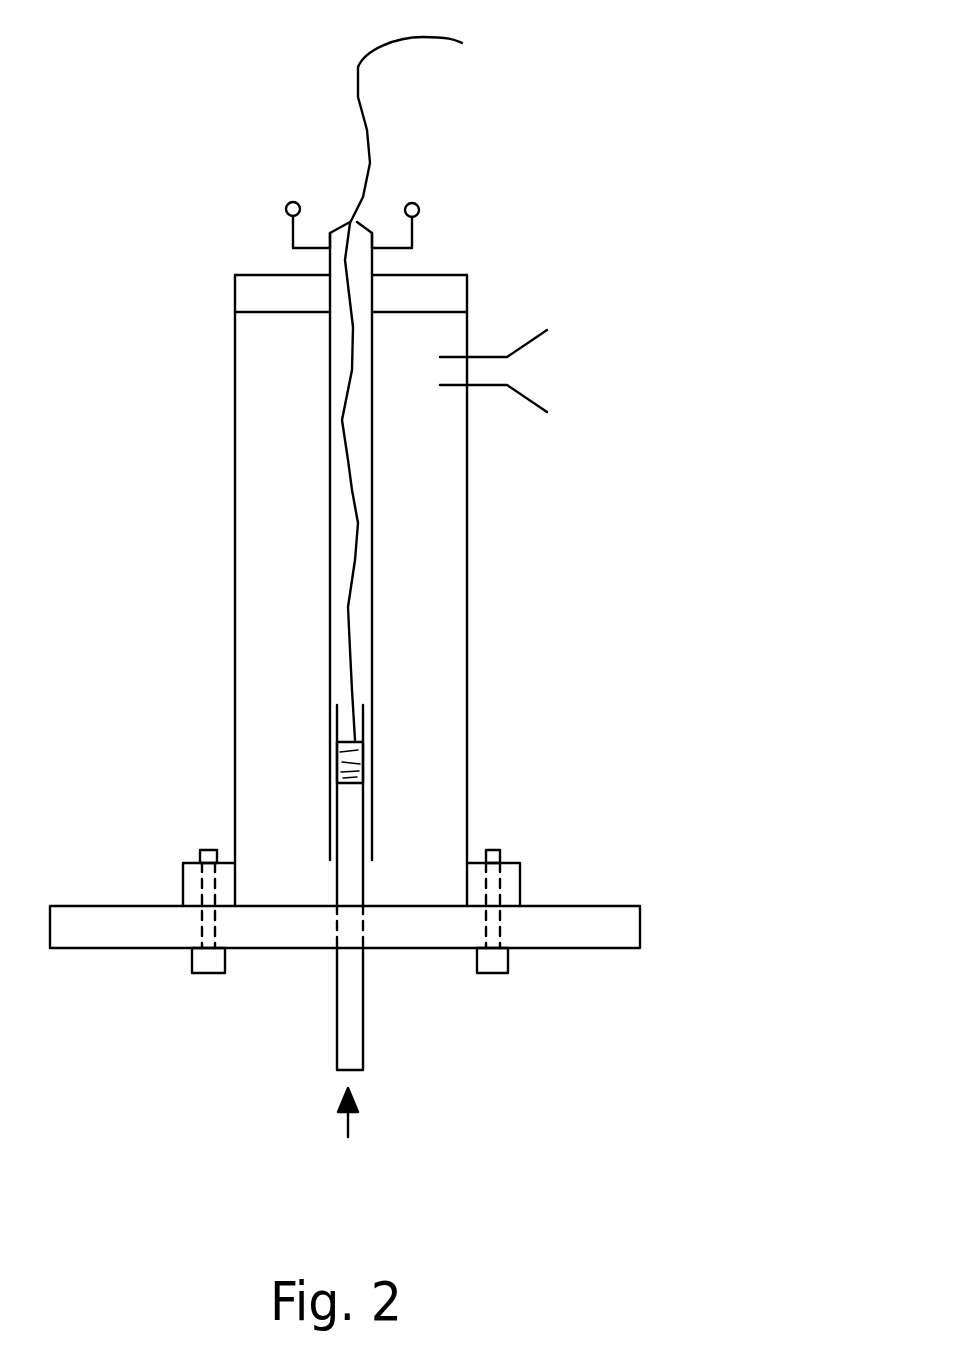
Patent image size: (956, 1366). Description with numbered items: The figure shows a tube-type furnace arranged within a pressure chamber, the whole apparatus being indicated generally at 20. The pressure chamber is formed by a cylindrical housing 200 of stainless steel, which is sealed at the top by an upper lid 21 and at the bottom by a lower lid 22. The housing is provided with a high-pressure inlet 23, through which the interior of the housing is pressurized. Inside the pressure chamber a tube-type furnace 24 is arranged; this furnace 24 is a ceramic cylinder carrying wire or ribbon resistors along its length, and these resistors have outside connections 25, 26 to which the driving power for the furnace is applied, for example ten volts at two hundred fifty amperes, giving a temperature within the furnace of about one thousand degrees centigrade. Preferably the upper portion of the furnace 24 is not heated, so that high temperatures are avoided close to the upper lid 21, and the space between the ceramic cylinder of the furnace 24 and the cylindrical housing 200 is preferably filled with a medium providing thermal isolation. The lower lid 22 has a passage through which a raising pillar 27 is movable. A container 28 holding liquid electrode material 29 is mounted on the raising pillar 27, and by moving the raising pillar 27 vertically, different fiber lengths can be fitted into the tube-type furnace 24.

The measuring device / sensor assembly 20 is at (358, 67).
The upper lid 21 is at (443, 273).
The lower lid 22 is at (535, 903).
The high-pressure inlet 23 is at (483, 357).
The tube-type furnace 24 is at (375, 483).
The outside connection 25 is at (293, 202).
The outside connection 26 is at (412, 203).
The raising pillar 27 is at (365, 1010).
The container 28 is at (367, 707).
The liquid electrode material 29 is at (342, 752).
The cylindrical housing 200 is at (467, 580).